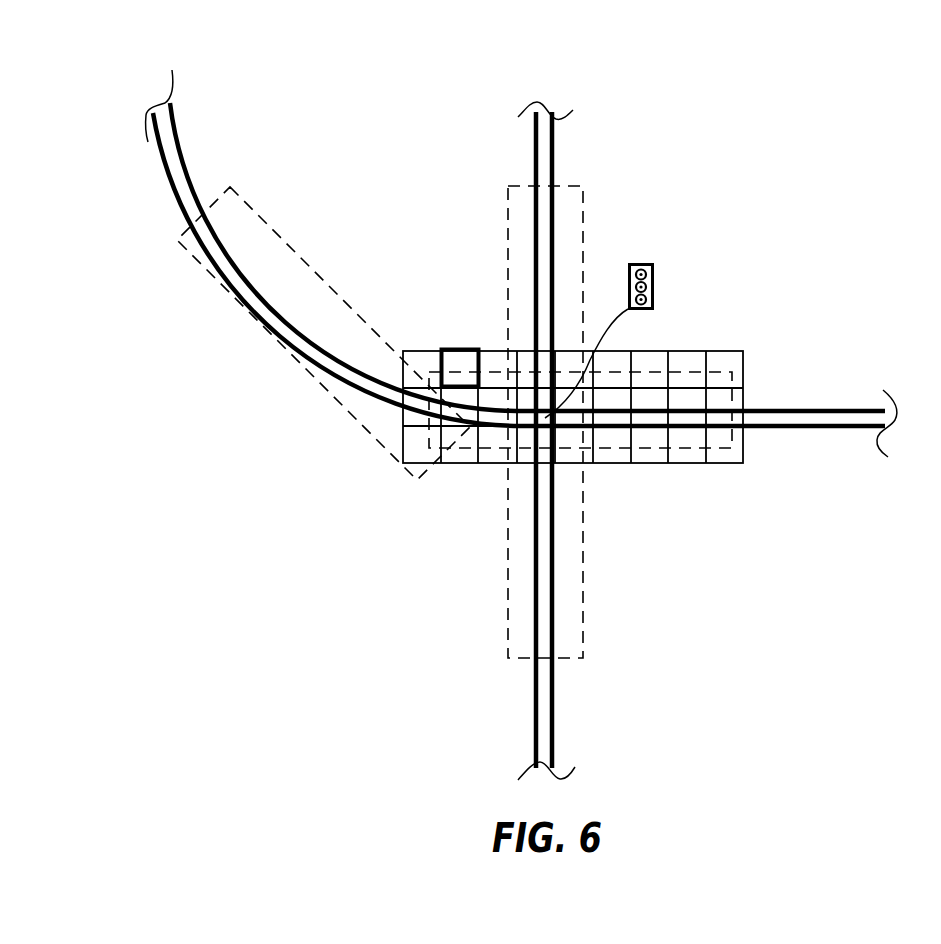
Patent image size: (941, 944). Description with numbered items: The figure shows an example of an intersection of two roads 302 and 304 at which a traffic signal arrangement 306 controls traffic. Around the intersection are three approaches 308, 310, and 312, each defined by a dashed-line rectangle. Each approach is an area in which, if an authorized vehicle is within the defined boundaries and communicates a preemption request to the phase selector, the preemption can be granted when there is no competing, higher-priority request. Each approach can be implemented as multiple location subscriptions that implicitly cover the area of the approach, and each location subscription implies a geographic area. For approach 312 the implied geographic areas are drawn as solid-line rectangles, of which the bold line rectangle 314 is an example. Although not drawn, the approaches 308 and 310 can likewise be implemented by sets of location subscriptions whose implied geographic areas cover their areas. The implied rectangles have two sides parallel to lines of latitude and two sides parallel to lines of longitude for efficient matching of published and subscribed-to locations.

The road 302 is at (171, 129).
The road 304 is at (532, 119).
The traffic signal arrangement 306 is at (652, 262).
The approach 308 is at (288, 246).
The approach 310 is at (583, 192).
The approach 312 is at (724, 368).
The bold line rectangle 314 is at (460, 348).